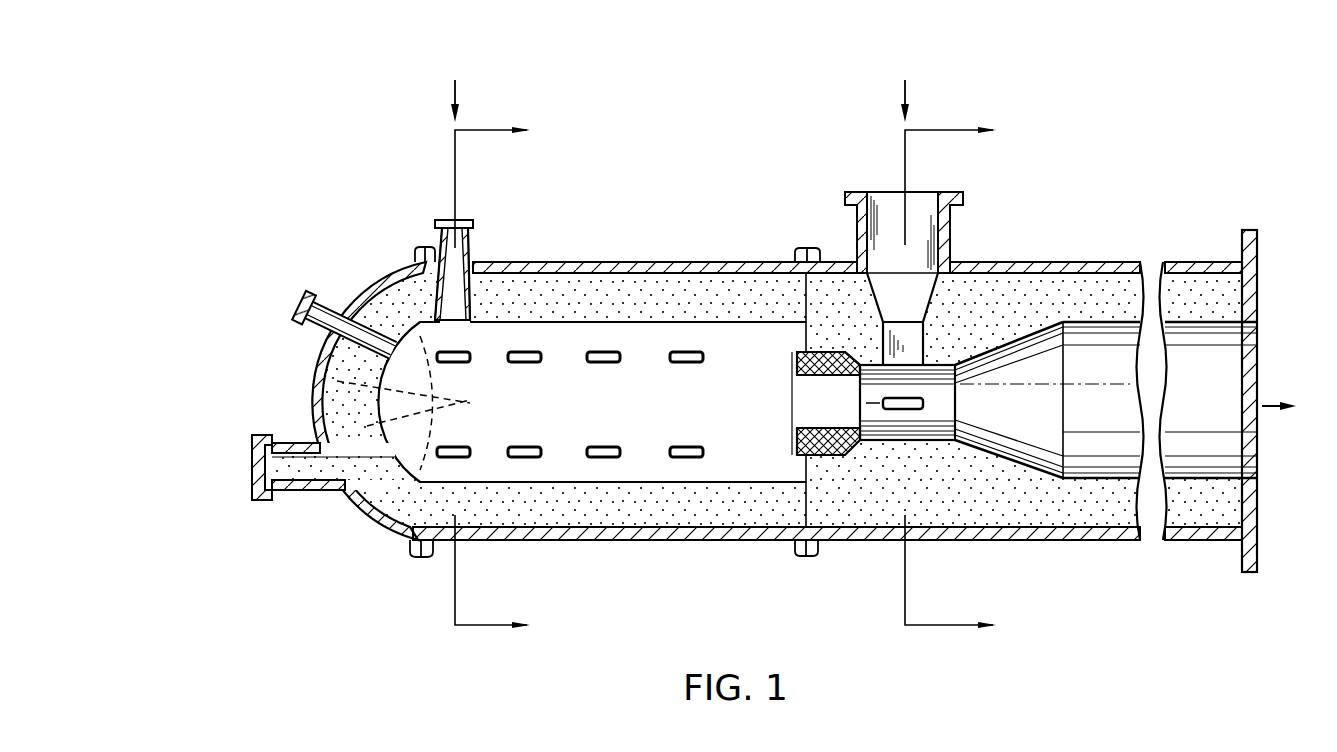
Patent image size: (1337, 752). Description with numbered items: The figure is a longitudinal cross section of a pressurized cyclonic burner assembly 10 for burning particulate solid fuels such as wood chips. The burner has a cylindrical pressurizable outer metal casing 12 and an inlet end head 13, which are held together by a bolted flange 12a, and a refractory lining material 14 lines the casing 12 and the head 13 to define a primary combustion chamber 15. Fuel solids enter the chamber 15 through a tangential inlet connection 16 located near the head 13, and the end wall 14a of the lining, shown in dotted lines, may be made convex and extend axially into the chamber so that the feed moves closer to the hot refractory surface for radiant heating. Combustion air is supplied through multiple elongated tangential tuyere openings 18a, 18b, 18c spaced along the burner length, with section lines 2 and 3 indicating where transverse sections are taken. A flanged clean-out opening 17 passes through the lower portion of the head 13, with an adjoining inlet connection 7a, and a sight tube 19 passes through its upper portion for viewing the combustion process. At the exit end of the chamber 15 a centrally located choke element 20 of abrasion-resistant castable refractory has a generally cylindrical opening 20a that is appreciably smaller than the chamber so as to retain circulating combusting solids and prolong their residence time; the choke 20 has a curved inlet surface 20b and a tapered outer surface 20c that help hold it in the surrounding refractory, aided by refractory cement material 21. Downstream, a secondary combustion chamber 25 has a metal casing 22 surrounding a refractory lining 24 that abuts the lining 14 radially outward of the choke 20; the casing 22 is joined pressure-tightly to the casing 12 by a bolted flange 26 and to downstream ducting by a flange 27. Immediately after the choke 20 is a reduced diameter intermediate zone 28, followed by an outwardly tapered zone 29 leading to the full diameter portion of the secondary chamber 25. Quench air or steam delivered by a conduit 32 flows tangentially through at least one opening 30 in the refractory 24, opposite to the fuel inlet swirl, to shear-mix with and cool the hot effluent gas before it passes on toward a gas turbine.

The section line 2- 2 is at (500, 381).
The section line 3- 3 is at (958, 381).
The oxidant inlet pipe 7a is at (300, 488).
The burner assembly 10 is at (706, 200).
The outer metal casing 12 is at (636, 262).
The bolted flange 12a is at (413, 544).
The head 13 is at (385, 276).
The refractory lining material 14 is at (716, 292).
The end wall 14a is at (337, 381).
The primary combustion chamber 15 is at (640, 432).
The tangential inlet connection 16 is at (472, 243).
The flanged clean-out opening 17 is at (298, 492).
The tangential inlet opening 18a is at (458, 447).
The tangential inlet opening 18b is at (520, 447).
The tangential inlet opening 18c is at (597, 447).
The sight tube 19 is at (332, 308).
The choke element 20 is at (791, 462).
The cylindrical opening 20a is at (823, 408).
The curved inlet surface 20b is at (818, 442).
The tapered outer surface 20c is at (852, 352).
The refractory cement material 21 is at (856, 445).
The metal casing 22 is at (1050, 266).
The refractory lining 24 is at (1095, 300).
The secondary combustion chamber 25 is at (1112, 420).
The bolted flange 26 is at (806, 248).
The flange 27 is at (1245, 235).
The reduced diameter intermediate zone 28 is at (947, 430).
The outwardly tapered zone 29 is at (1012, 350).
The opening 30 is at (928, 345).
The conduit 32 is at (953, 223).